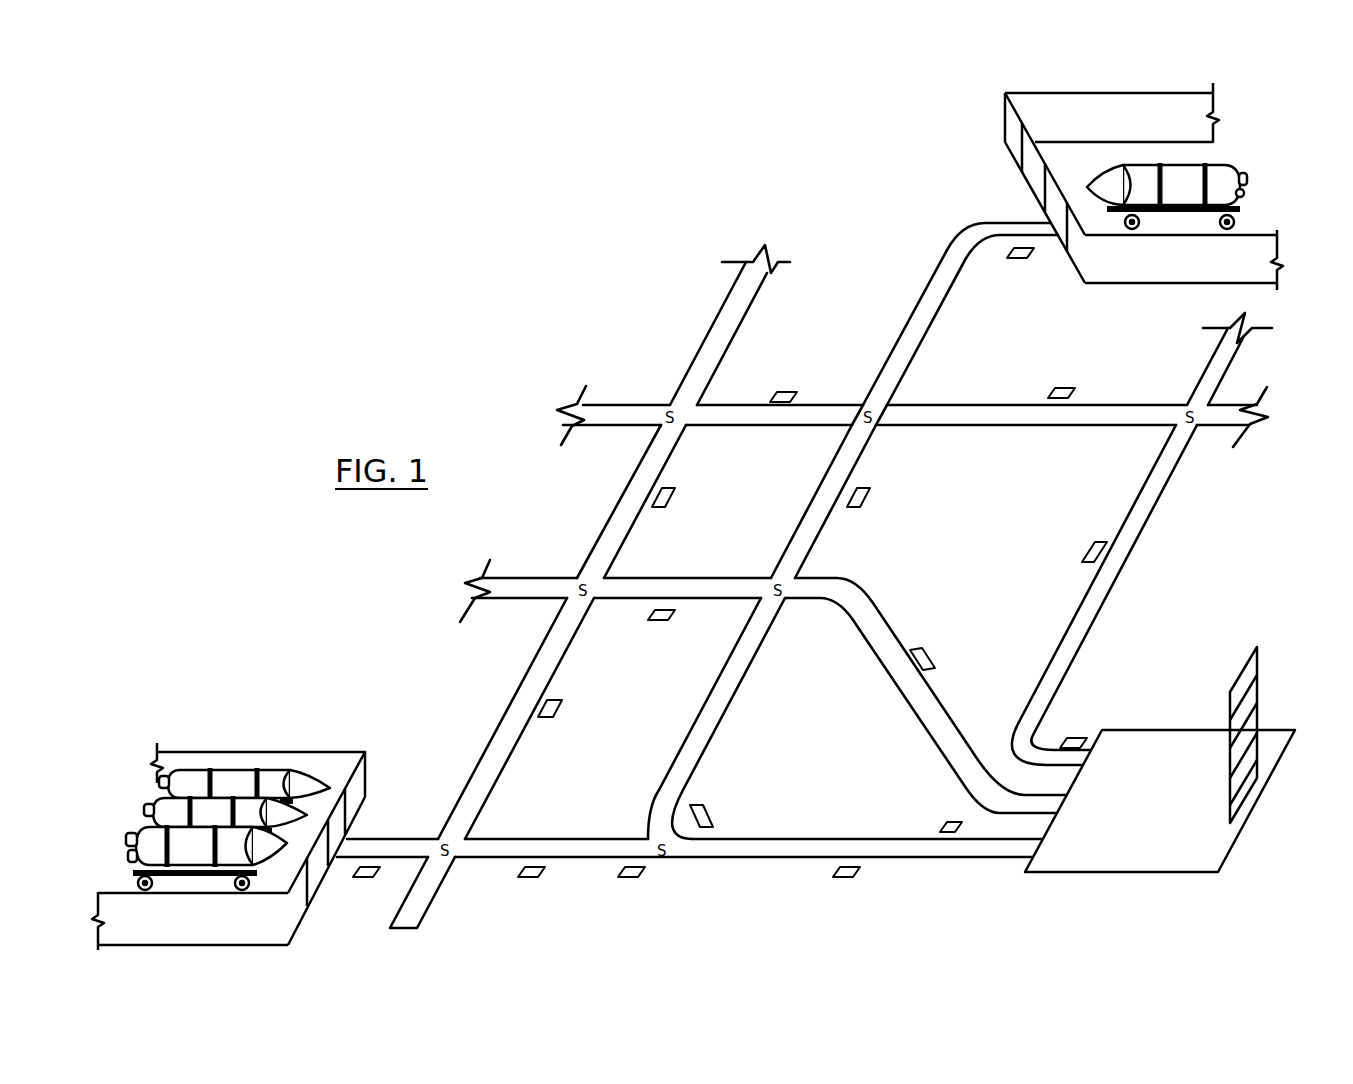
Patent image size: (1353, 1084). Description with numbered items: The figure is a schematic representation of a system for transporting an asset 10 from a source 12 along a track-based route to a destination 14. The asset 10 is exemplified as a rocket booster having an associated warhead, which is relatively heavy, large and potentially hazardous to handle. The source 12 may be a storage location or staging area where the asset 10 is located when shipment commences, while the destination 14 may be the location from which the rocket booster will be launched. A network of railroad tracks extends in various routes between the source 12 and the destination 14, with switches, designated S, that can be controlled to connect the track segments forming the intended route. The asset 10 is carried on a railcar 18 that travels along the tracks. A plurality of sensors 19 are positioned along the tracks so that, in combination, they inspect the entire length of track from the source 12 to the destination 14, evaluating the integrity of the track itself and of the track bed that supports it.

The asset 10 is at (1217, 168).
The source 12 is at (1105, 90).
The destination 14 is at (1167, 728).
The railcar 18 is at (1244, 194).
The sensors 19 is at (1013, 259).